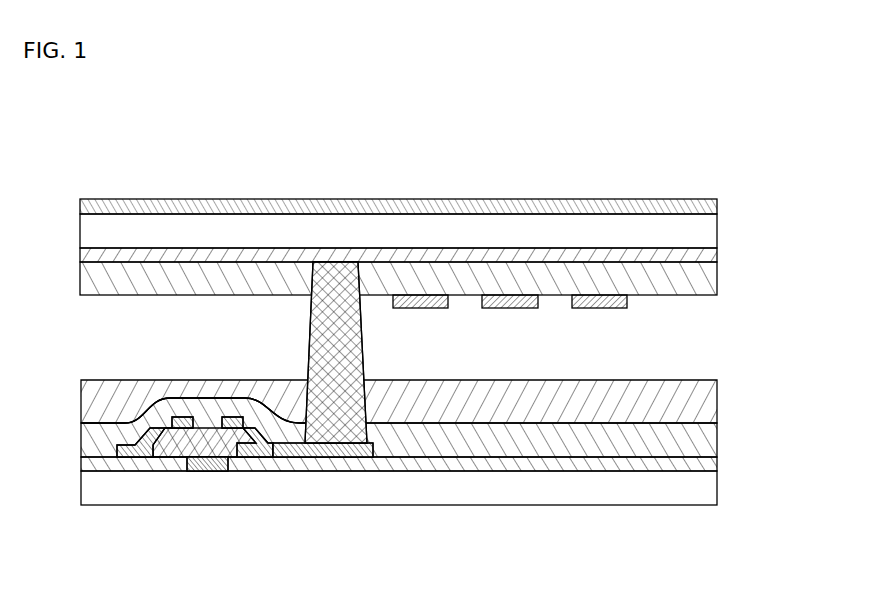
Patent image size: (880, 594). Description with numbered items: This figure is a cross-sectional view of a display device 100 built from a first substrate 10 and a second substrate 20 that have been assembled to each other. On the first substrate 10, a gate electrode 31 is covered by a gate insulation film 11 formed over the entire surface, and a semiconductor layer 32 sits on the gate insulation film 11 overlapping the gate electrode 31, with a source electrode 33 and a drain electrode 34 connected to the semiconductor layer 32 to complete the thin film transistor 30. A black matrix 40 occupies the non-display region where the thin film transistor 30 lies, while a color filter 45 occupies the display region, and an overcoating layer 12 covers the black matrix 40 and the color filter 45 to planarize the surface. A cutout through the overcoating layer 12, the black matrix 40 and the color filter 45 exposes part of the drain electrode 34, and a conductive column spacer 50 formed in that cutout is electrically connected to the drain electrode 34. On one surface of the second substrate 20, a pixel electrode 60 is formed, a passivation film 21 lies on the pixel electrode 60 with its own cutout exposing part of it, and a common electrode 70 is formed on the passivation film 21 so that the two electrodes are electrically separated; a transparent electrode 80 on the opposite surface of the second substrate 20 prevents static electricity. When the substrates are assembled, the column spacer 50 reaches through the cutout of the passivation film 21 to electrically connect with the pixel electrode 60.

The display device 100 is at (557, 132).
The first substrate 10 is at (715, 491).
The gate insulation film 11 is at (715, 464).
The overcoating layer 12 is at (715, 402).
The second substrate 20 is at (717, 229).
The passivation film 21 is at (717, 282).
The thin film transistor 30 is at (245, 505).
The gate electrode 31 is at (200, 471).
The semiconductor layer 32 is at (255, 452).
The source electrode 33 is at (128, 457).
The drain electrode 34 is at (320, 452).
The black matrix 40 is at (88, 439).
The color filter 45 is at (715, 440).
The column spacer 50 is at (322, 338).
The pixel electrode 60 is at (717, 257).
The common electrode 70 is at (427, 308).
The transparent electrode 80 is at (717, 202).